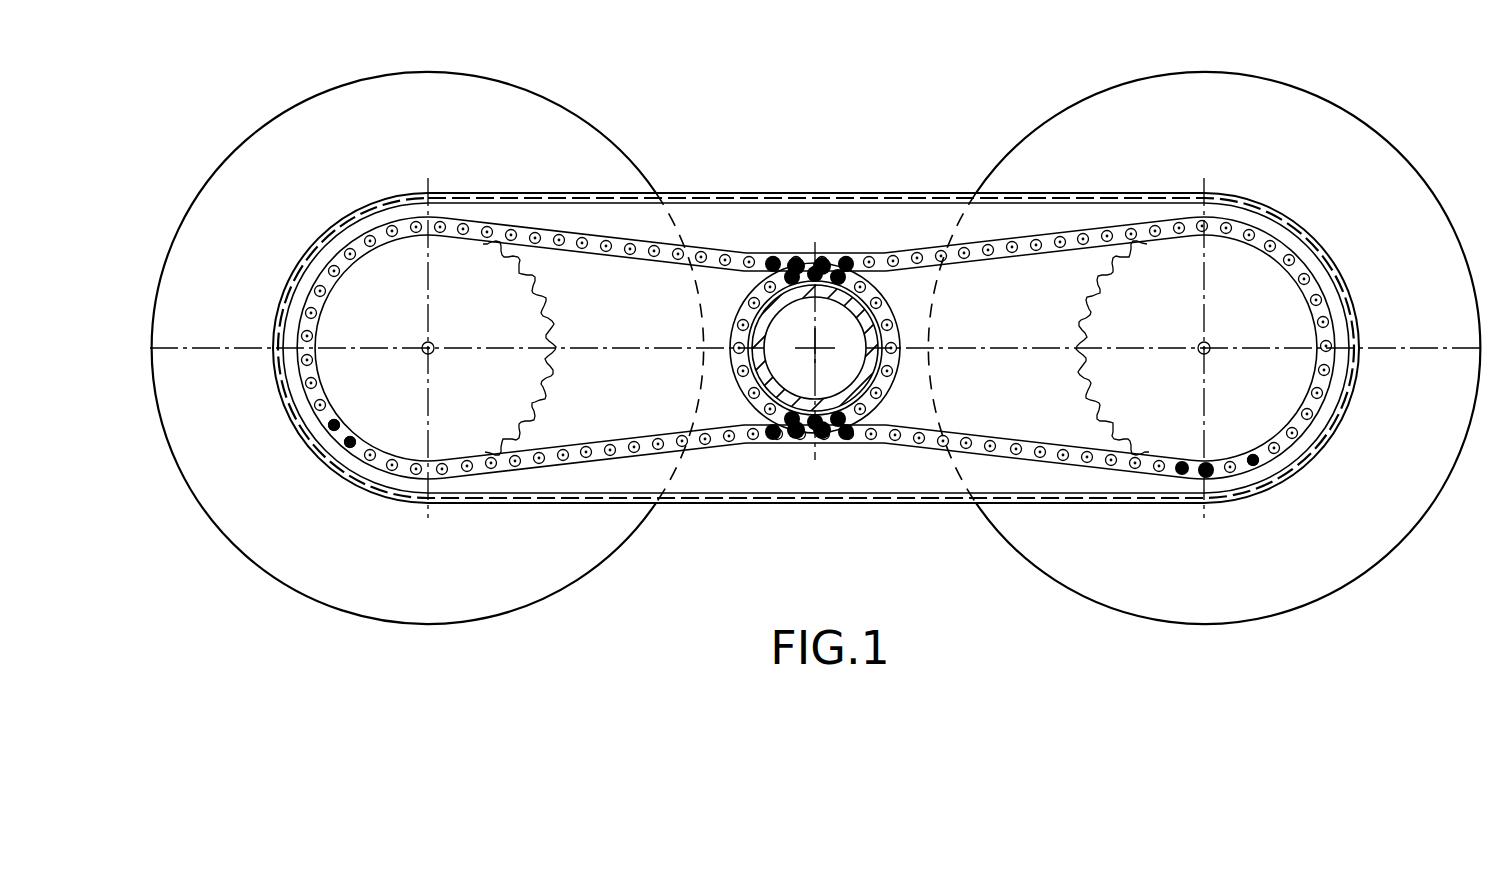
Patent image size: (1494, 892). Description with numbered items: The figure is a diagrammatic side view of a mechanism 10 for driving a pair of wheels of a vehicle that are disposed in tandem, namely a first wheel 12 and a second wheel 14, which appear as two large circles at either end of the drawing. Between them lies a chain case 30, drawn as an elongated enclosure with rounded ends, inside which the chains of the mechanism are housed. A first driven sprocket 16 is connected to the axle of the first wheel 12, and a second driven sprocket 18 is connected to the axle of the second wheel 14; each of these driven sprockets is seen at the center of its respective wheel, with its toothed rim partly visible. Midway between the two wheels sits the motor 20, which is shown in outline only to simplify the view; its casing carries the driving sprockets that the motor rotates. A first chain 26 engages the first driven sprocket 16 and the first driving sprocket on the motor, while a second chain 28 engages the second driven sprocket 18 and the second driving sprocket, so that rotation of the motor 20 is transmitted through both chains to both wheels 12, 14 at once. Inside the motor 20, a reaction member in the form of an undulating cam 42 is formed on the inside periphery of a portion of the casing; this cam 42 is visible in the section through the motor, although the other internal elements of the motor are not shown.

The mechanism 10 is at (884, 127).
The first wheel 12 is at (548, 98).
The second wheel 14 is at (1315, 98).
The first driven sprocket 16 is at (546, 392).
The second driven sprocket 18 is at (1104, 312).
The motor 20 is at (803, 428).
The first chain 26 is at (716, 250).
The second chain 28 is at (898, 248).
The chain case 30 is at (836, 196).
The undulating cam 42 is at (800, 300).